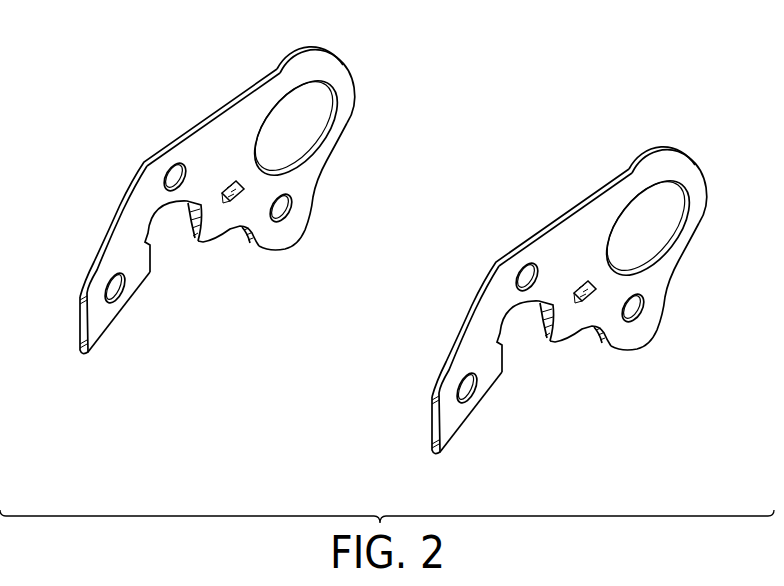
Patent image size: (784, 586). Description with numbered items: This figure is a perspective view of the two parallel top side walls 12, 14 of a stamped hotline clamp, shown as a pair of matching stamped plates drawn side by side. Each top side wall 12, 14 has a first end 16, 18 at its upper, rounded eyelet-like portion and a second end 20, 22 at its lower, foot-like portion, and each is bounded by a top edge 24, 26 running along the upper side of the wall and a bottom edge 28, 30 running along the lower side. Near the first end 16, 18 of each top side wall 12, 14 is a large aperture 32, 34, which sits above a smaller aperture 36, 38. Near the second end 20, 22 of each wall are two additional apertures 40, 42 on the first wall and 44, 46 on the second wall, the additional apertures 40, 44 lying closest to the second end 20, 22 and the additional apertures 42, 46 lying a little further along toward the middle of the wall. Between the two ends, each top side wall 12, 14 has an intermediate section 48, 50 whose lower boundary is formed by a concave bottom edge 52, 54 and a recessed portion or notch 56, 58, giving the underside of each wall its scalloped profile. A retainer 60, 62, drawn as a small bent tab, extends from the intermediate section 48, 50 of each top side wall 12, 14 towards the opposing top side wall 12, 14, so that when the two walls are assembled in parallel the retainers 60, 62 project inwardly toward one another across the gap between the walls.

The top side wall 12 is at (150, 76).
The top side wall 14 is at (505, 215).
The first end 16 is at (354, 86).
The first end 18 is at (706, 186).
The second end 20 is at (83, 353).
The second end 22 is at (437, 453).
The top edge 24 is at (269, 73).
The top edge 26 is at (625, 170).
The bottom edge 28 is at (117, 322).
The bottom edge 30 is at (472, 422).
The large aperture 32 is at (302, 120).
The large aperture 34 is at (657, 220).
The smaller aperture 36 is at (287, 213).
The smaller aperture 38 is at (641, 314).
The additional aperture 40 is at (107, 290).
The additional aperture 42 is at (165, 182).
The additional aperture 44 is at (460, 390).
The additional aperture 46 is at (518, 283).
The intermediate section 48 is at (220, 137).
The intermediate section 50 is at (576, 234).
The concave bottom edge 52 is at (217, 238).
The concave bottom edge 54 is at (572, 340).
The recessed portion or notch 56 is at (172, 228).
The recessed portion or notch 58 is at (527, 330).
The retainer 60 is at (235, 182).
The retainer 62 is at (589, 283).